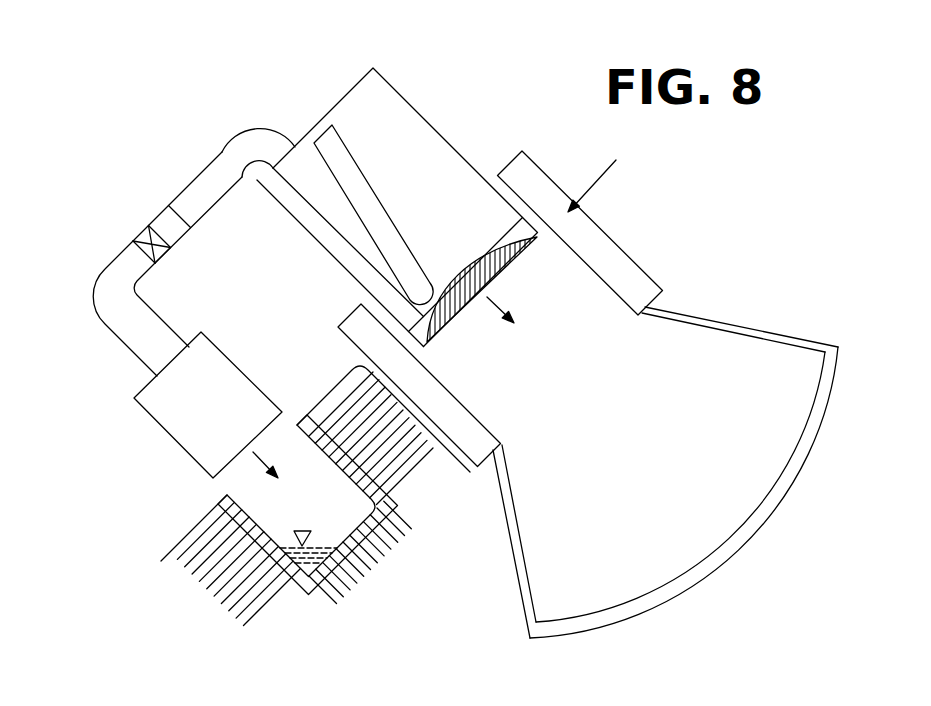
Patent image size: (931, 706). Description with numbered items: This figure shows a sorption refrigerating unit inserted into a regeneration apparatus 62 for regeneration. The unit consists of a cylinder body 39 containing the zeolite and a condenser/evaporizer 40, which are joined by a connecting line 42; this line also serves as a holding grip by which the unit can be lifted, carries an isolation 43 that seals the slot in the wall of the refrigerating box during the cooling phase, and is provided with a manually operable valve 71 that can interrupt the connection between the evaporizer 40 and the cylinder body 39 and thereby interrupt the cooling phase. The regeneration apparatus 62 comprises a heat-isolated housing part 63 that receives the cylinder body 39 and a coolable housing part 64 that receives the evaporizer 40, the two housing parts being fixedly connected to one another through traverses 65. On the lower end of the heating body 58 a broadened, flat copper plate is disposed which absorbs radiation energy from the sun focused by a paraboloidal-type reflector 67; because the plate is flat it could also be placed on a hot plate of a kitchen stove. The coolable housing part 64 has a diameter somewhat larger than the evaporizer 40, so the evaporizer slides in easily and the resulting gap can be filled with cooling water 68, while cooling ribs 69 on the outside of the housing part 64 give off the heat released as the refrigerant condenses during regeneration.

The cylinder body 39 is at (403, 126).
The evaporizer 40 is at (222, 372).
The connecting line 42 is at (262, 131).
The isolation 43 is at (206, 183).
The heating body 58 is at (405, 210).
The regeneration apparatus 62 is at (608, 172).
The heat-isolated housing part 63 is at (611, 257).
The coolable housing part 64 is at (383, 562).
The traverses 65 is at (420, 480).
The paraboloidal-type reflector 67 is at (710, 566).
The cooling water 68 is at (438, 327).
The cooling ribs 69 is at (247, 603).
The valve 71 is at (138, 238).